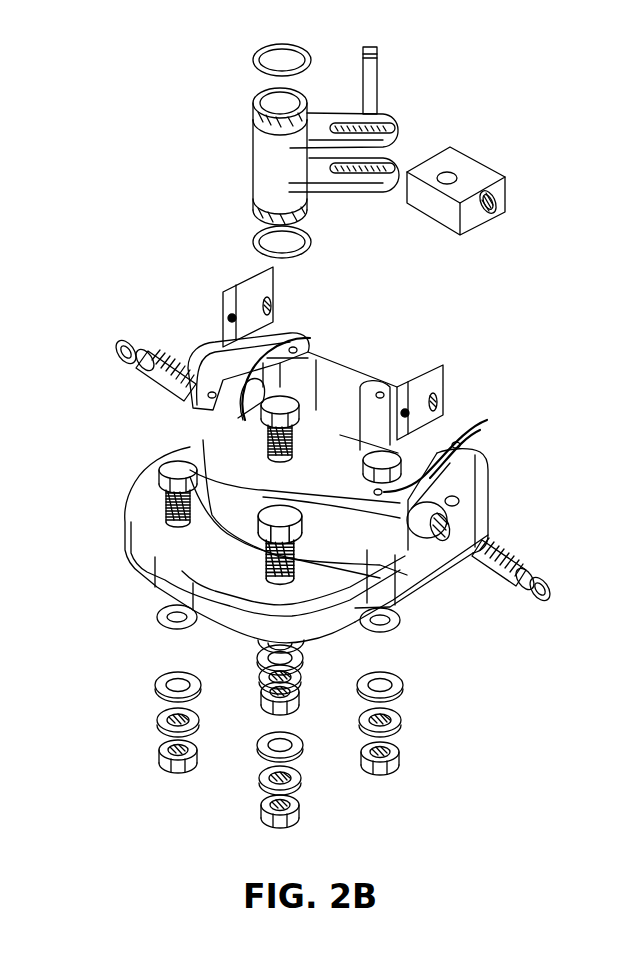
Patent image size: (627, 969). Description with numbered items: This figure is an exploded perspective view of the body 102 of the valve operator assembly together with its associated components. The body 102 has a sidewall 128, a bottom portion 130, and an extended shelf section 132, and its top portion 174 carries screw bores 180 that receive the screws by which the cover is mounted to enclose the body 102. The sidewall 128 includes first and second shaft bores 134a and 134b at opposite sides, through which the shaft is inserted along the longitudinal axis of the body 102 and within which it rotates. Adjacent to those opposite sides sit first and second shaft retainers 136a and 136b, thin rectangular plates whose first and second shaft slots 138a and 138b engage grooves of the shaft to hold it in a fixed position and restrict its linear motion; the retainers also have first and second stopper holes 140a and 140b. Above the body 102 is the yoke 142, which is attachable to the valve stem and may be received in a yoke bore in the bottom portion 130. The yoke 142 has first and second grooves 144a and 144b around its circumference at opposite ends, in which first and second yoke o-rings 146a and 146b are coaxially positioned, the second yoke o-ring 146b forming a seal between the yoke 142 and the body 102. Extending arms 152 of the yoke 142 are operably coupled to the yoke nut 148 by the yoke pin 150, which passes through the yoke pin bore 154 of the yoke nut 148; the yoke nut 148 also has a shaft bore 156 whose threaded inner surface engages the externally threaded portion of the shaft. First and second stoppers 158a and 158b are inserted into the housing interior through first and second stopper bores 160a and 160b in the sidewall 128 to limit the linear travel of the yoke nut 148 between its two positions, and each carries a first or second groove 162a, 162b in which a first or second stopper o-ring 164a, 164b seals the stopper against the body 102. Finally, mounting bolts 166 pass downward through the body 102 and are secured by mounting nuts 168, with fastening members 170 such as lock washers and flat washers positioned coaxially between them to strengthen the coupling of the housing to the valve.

The body 102 is at (329, 482).
The sidewall 128 is at (487, 478).
The bottom portion 130 is at (427, 577).
The extended shelf section 132 is at (127, 478).
The first shaft bore 134a is at (285, 352).
The second shaft bore 134b is at (459, 501).
The first shaft retainer 136a is at (251, 300).
The second shaft retainer 136b is at (445, 393).
The first shaft slot 138a is at (272, 305).
The second shaft slot 138b is at (440, 405).
The first stopper hole 140a is at (252, 282).
The second stopper hole 140b is at (405, 409).
The yoke 142 is at (309, 156).
The first groove 144a is at (256, 110).
The second groove 144b is at (256, 199).
The first yoke o-ring 146a is at (256, 58).
The second yoke o-ring 146b is at (258, 236).
The yoke nut 148 is at (480, 178).
The yoke pin 150 is at (377, 63).
The extending arms 152 is at (388, 120).
The yoke pin bore 154 is at (447, 172).
The shaft bore 156 is at (493, 212).
The first stopper 158a is at (152, 372).
The second stopper 158b is at (500, 560).
The first stopper bore 160a is at (234, 404).
The second stopper bore 160b is at (440, 540).
The first groove 162a is at (152, 346).
The second groove 162b is at (540, 568).
The first stopper o-ring 164a is at (121, 345).
The second stopper o-ring 164b is at (548, 590).
The mounting bolts 166 is at (170, 456).
The mounting nuts 168 is at (158, 760).
The fastening members 170 is at (134, 719).
The top portion 174 is at (357, 363).
The screw bores 180 is at (455, 443).